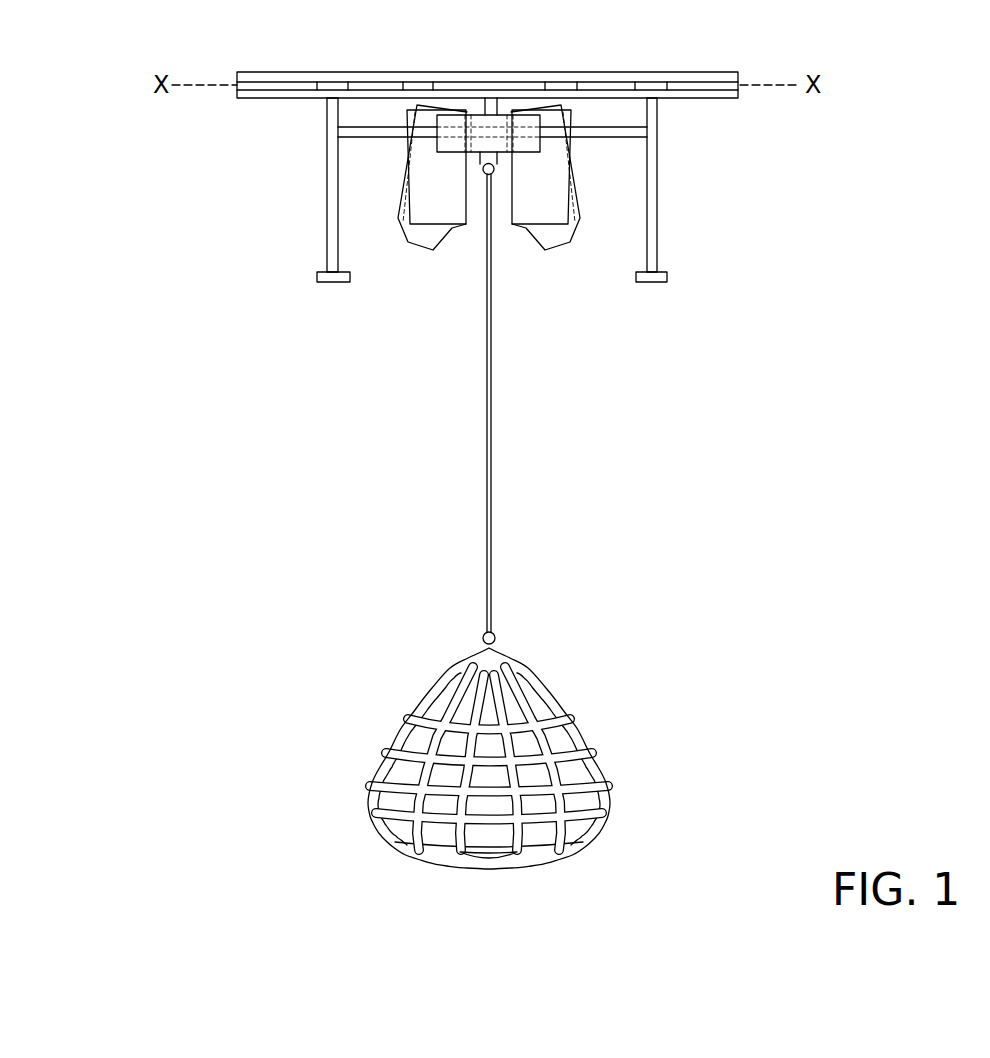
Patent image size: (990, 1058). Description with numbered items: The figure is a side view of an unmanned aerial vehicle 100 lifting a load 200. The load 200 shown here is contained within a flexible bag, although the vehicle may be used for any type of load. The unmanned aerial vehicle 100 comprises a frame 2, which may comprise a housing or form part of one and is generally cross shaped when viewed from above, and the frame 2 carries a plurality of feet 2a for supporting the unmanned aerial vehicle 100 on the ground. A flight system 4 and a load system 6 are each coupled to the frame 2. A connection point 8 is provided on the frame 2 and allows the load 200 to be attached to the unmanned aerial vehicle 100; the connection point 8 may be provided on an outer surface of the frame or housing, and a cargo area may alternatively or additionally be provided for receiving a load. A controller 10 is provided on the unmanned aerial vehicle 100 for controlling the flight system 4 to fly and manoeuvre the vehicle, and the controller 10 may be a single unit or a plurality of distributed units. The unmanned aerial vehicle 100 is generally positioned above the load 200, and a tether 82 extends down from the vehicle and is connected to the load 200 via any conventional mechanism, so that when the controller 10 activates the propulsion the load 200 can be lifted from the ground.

The unmanned aerial vehicle 100 is at (795, 141).
The flight system 4 is at (738, 40).
The frame 2 is at (375, 140).
The feet 2a is at (332, 283).
The controller 10 is at (497, 115).
The connection point 8 is at (486, 173).
The load system 6 is at (397, 271).
The tether 82 is at (492, 437).
The load 200 is at (590, 650).